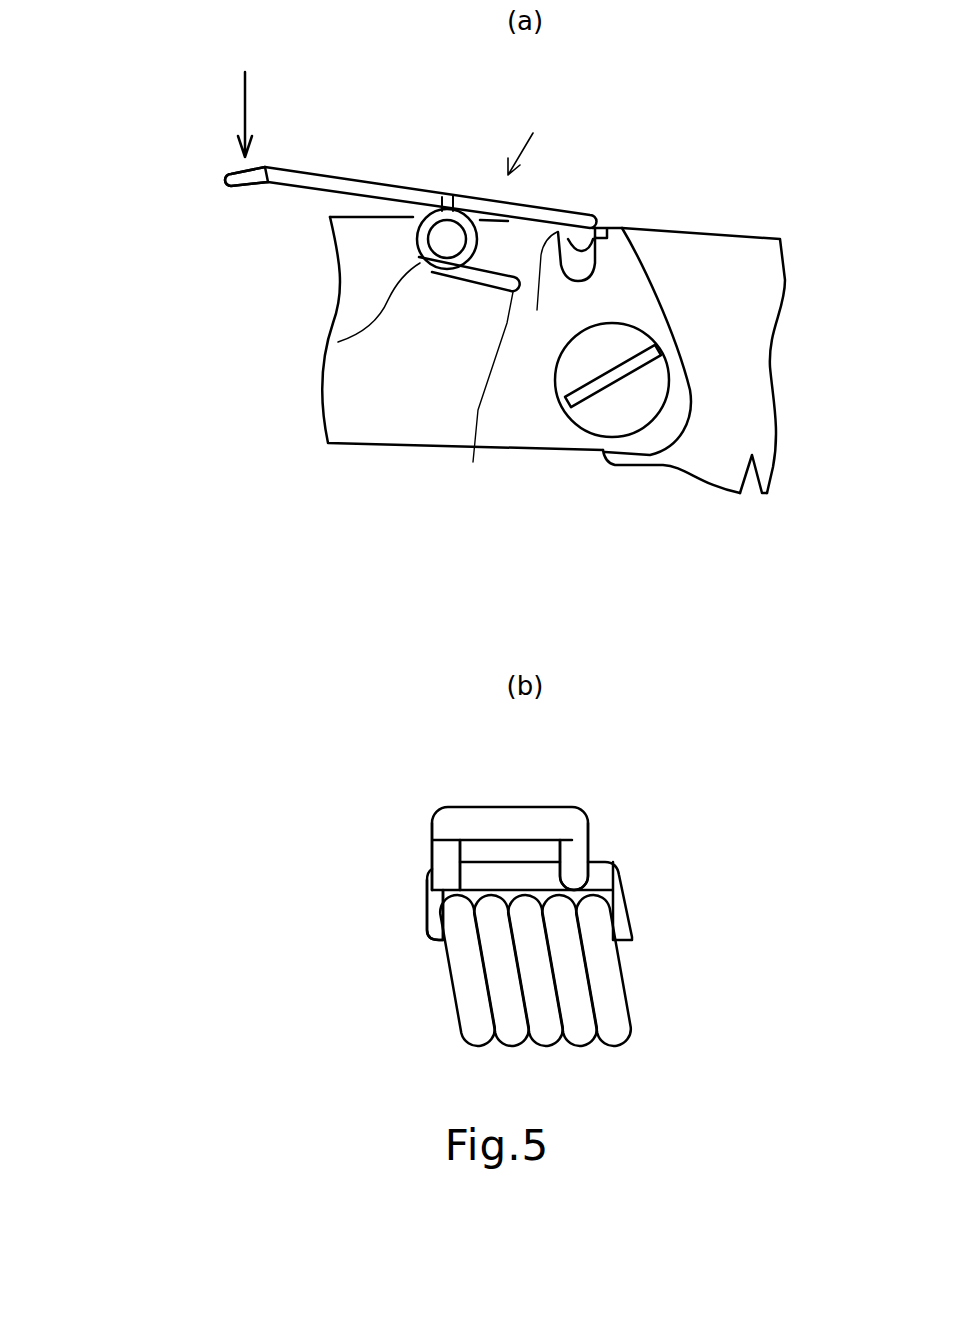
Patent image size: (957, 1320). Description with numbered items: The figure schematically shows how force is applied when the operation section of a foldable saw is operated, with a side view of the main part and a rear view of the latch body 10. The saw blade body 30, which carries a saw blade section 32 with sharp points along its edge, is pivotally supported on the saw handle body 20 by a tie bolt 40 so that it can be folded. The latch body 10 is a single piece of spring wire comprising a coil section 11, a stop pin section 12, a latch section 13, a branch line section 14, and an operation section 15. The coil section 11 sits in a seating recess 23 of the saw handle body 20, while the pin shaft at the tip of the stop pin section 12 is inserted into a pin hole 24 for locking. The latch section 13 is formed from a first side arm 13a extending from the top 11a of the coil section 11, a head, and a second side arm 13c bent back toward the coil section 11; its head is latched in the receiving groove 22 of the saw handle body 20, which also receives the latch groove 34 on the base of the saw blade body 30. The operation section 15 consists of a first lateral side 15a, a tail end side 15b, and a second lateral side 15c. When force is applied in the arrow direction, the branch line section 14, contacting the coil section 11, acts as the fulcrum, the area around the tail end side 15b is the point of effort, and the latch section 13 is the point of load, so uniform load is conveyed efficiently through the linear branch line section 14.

The latch body 10 is at (527, 133).
The coil section 11 is at (422, 243).
The top of the coil section 11a is at (442, 203).
The stop pin section 12 is at (470, 278).
The latch section 13 is at (553, 222).
The first side arm 13a is at (435, 925).
The second side arm 13c is at (627, 925).
The branch line section 14 is at (507, 878).
The operation section 15 is at (313, 193).
The first lateral side 15a is at (440, 867).
The tail end side 15b is at (232, 178).
The second lateral side 15c is at (580, 855).
The saw handle body 20 is at (395, 415).
The receiving groove 22 is at (537, 310).
The seating recess 23 is at (338, 342).
The pin hole 24 is at (482, 395).
The saw blade body 30 is at (722, 268).
The saw blade section 32 is at (753, 500).
The latch groove 34 is at (607, 228).
The tie bolt 40 is at (595, 417).